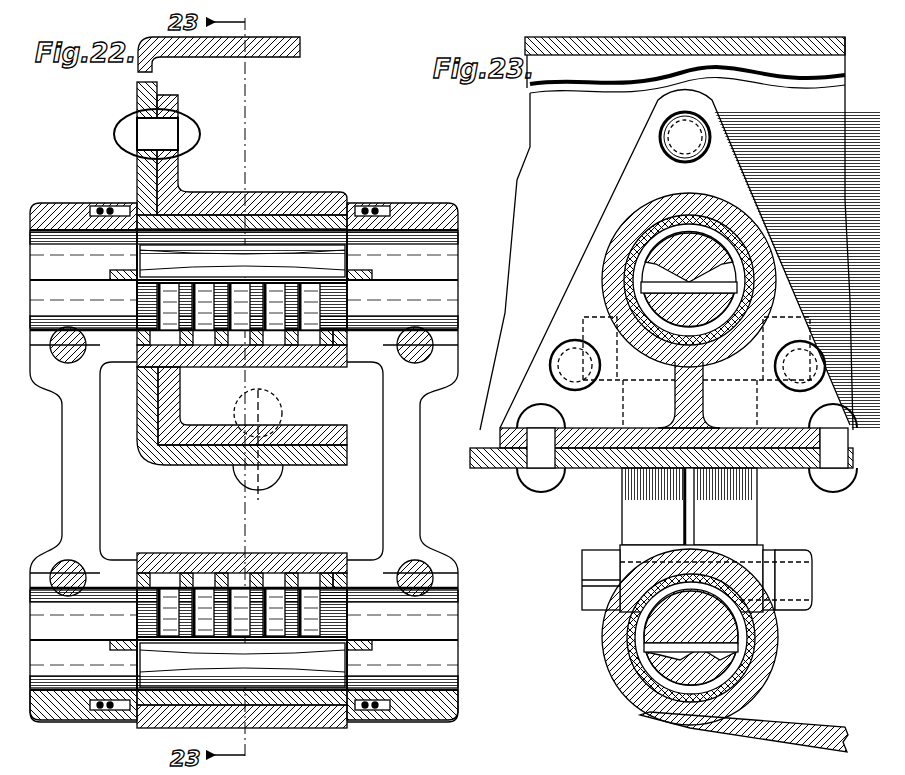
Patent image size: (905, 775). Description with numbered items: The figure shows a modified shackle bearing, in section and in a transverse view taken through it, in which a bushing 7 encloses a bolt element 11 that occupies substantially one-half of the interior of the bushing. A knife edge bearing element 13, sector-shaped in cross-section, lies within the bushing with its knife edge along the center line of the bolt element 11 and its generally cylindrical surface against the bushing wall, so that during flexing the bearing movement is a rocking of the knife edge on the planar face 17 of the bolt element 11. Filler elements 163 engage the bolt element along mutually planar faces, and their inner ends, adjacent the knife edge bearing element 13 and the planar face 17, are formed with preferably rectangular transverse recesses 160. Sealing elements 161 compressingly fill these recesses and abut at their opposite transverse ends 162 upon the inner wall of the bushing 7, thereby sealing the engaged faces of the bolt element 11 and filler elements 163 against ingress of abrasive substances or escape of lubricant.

In FIG. 22, the bushing 7 is at (287, 217).
In FIG. 23, the bushing 7 is at (660, 232).
In FIG. 22, the bolt element 11 is at (445, 315).
In FIG. 23, the bolt element 11 is at (675, 324).
In FIG. 22, the knife edge bearing element 13 is at (318, 250).
In FIG. 22, the planar face 17 is at (440, 283).
In FIG. 22, the transverse recess 160 is at (375, 283).
In FIG. 22, the sealing element 161 is at (362, 280).
In FIG. 23, the sealing element 161 is at (653, 275).
In FIG. 23, the transverse end 162 is at (640, 282).
In FIG. 22, the filler element 163 is at (45, 255).